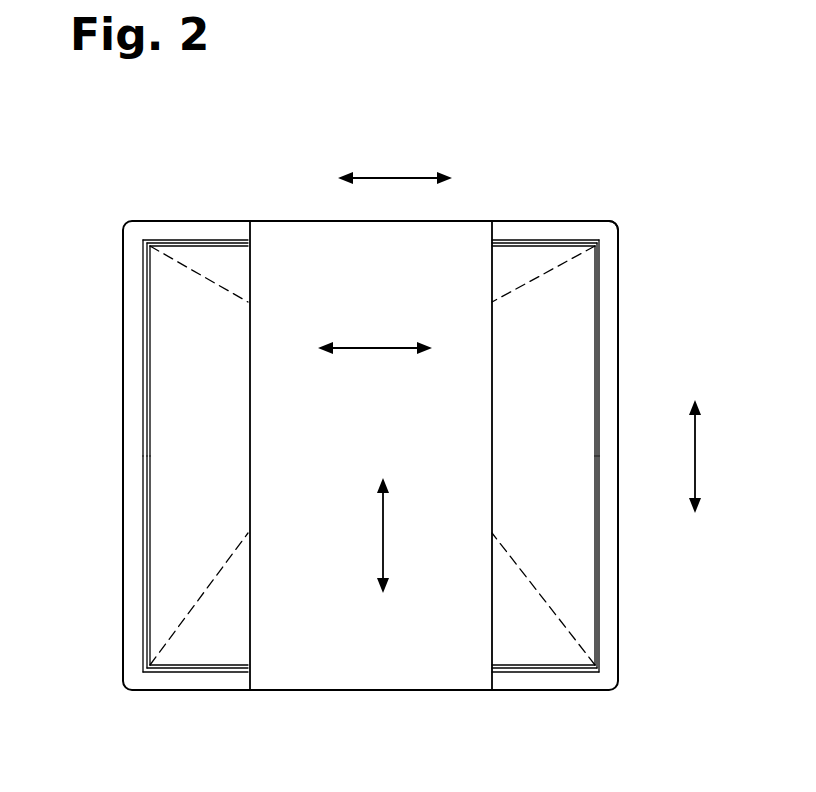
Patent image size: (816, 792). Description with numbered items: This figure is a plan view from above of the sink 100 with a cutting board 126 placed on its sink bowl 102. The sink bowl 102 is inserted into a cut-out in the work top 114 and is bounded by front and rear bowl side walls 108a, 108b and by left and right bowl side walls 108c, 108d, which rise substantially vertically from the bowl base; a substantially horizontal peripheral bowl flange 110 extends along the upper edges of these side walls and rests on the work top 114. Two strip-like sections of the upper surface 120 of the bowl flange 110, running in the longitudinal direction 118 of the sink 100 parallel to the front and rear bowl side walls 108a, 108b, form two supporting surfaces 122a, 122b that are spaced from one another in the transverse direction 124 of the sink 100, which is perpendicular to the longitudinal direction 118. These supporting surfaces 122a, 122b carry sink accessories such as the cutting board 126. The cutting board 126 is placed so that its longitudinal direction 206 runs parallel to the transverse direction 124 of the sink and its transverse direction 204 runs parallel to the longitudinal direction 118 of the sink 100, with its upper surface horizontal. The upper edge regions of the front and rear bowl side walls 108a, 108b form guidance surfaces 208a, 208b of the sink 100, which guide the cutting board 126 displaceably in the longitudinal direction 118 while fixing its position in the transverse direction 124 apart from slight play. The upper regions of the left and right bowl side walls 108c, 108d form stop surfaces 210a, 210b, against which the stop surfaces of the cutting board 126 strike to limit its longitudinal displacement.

The sink 100 is at (86, 206).
The sink bowl 102 is at (153, 205).
The front bowl side wall 108a is at (178, 262).
The rear bowl side wall 108b is at (207, 652).
The left bowl side wall 108c is at (163, 410).
The right bowl side wall 108d is at (592, 306).
The peripheral bowl flange 110 is at (608, 265).
The work top 114 is at (62, 509).
The longitudinal direction of the sink 118 is at (397, 176).
The upper surface of the bowl flange 120 is at (603, 230).
The first supporting surface 122a is at (503, 233).
The second supporting surface 122b is at (515, 676).
The transverse direction of the sink 124 is at (697, 455).
The cutting board 126 is at (291, 255).
The transverse direction of the cutting board 204 is at (377, 346).
The longitudinal direction of the cutting board 206 is at (385, 536).
The first guidance surface of the sink 208a is at (541, 250).
The second guidance surface of the sink 208b is at (543, 650).
The first stop surface of the sink 210a is at (163, 552).
The second stop surface of the sink 210b is at (592, 563).